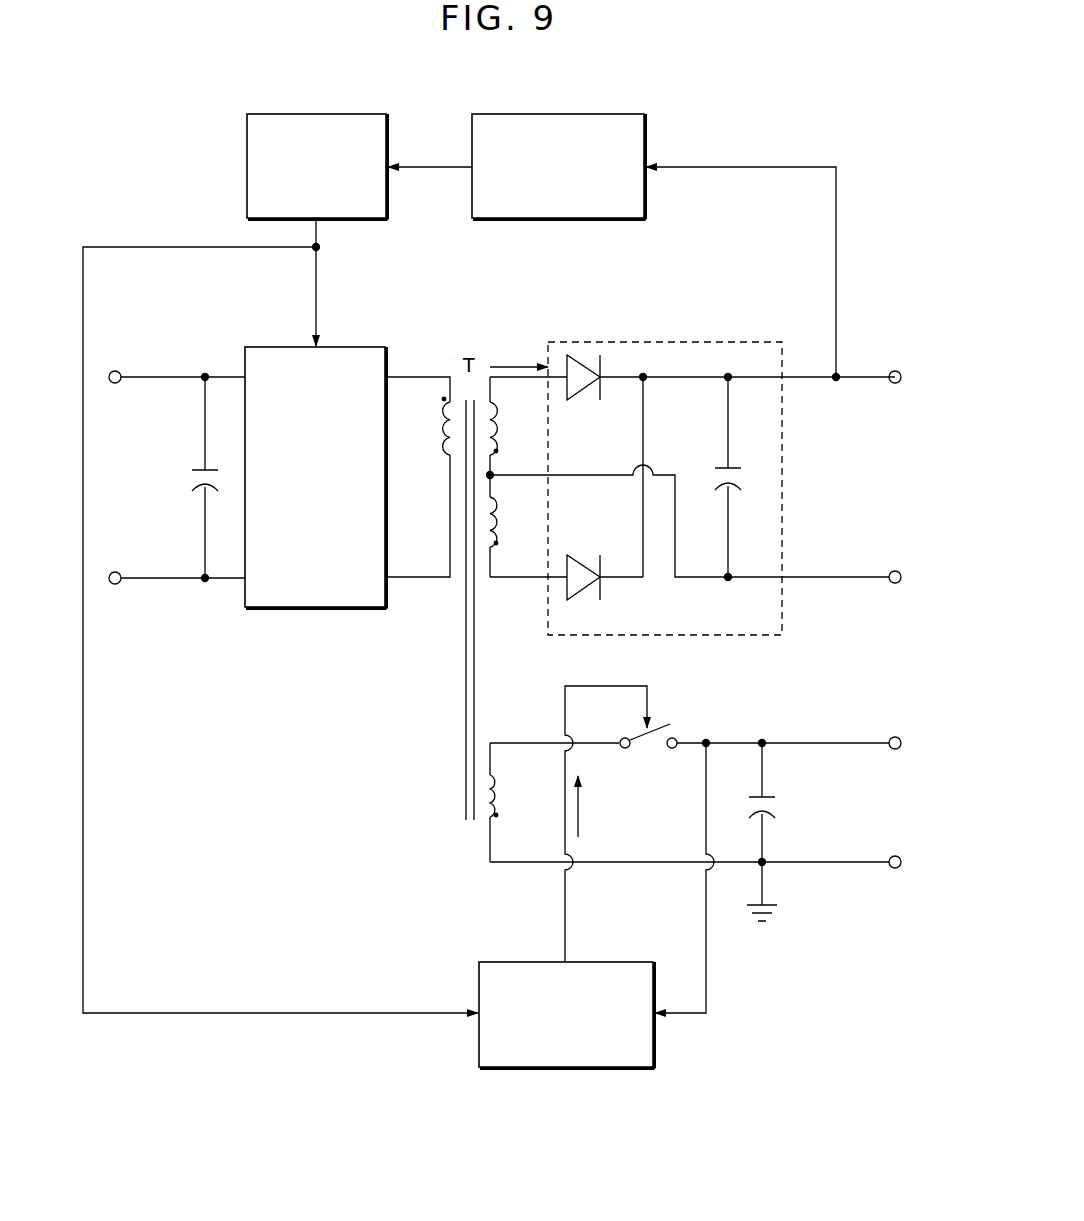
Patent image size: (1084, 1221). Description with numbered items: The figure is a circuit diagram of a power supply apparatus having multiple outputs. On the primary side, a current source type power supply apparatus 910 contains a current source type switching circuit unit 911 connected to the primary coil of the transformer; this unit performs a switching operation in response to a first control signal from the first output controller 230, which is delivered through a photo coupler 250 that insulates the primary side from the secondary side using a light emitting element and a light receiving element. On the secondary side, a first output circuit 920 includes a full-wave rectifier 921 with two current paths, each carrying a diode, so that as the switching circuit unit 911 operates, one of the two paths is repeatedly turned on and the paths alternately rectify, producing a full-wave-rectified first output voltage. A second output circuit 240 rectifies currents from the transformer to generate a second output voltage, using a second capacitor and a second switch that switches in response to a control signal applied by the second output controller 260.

The first output controller 230 is at (578, 114).
The second output circuit 240 is at (503, 884).
The photo coupler 250 is at (338, 114).
The second output controller 260 is at (585, 962).
The current source type power supply apparatus 910 is at (222, 343).
The current source type switching circuit unit 911 is at (333, 347).
The first output circuit 920 is at (537, 330).
The full-wave rectifier 921 is at (665, 342).